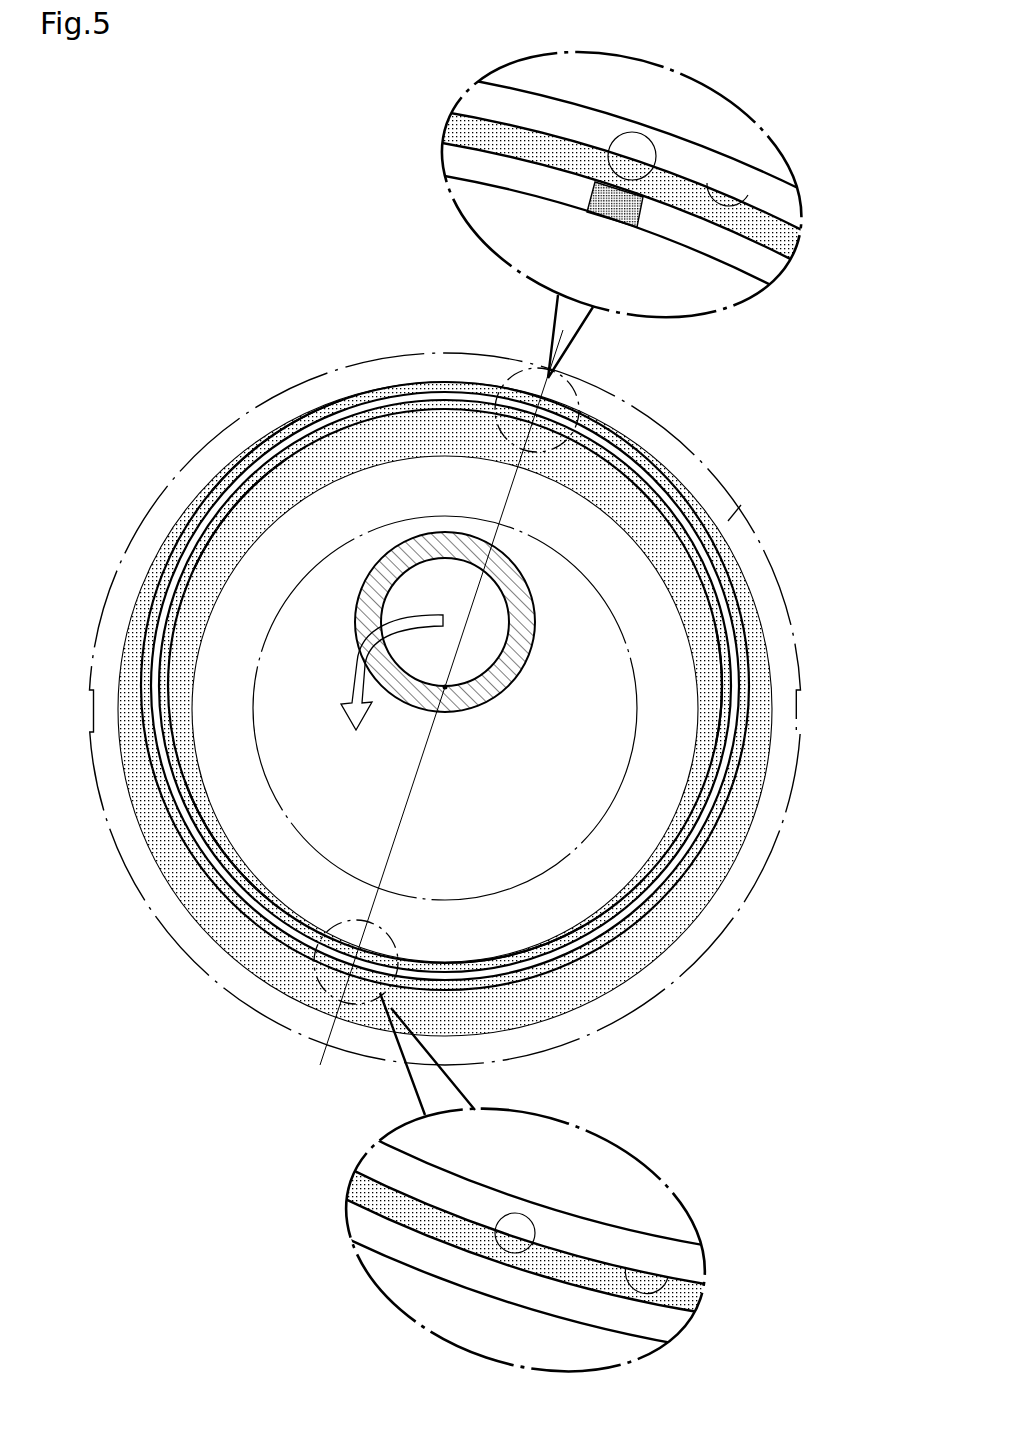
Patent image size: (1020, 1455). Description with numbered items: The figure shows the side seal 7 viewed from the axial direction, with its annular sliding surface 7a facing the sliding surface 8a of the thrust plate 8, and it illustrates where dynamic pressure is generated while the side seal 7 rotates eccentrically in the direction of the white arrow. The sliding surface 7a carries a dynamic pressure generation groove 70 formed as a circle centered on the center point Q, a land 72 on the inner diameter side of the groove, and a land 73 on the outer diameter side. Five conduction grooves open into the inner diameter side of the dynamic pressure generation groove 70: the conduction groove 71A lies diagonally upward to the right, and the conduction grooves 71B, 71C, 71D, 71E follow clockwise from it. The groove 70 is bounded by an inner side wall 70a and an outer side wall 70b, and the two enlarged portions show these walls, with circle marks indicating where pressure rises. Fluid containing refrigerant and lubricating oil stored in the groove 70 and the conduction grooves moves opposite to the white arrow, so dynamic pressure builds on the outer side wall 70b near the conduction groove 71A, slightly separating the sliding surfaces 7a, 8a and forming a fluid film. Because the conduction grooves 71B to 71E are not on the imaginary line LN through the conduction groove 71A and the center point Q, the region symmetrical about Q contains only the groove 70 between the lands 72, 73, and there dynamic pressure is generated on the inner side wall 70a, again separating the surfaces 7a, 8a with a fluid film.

The side seal 7 is at (165, 538).
The sliding surface 7a is at (325, 441).
The thrust plate 8 is at (705, 452).
The sliding surface 8a is at (736, 509).
The dynamic pressure generation groove 70 is at (545, 133).
The inner side wall 70a is at (670, 1277).
The outer side wall 70b is at (740, 197).
The conduction groove 71A is at (587, 212).
The conduction groove 71B is at (712, 683).
The conduction groove 71C is at (528, 947).
The conduction groove 71D is at (232, 840).
The conduction groove 71E is at (233, 530).
The land 72 is at (590, 1240).
The land 73 is at (692, 157).
The center point Q is at (444, 704).
The imaginary line LN is at (434, 723).